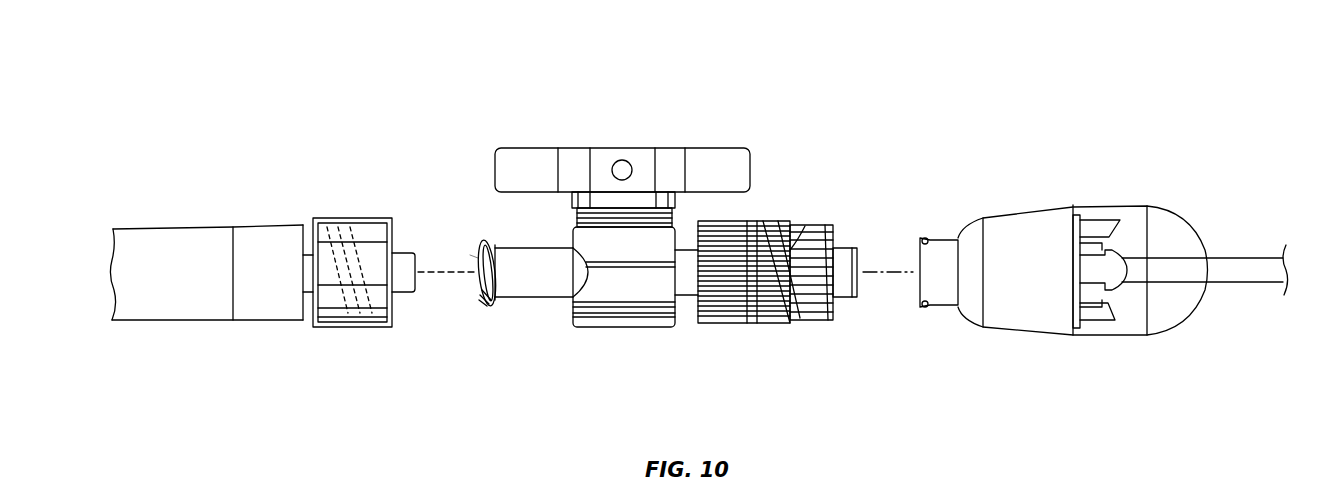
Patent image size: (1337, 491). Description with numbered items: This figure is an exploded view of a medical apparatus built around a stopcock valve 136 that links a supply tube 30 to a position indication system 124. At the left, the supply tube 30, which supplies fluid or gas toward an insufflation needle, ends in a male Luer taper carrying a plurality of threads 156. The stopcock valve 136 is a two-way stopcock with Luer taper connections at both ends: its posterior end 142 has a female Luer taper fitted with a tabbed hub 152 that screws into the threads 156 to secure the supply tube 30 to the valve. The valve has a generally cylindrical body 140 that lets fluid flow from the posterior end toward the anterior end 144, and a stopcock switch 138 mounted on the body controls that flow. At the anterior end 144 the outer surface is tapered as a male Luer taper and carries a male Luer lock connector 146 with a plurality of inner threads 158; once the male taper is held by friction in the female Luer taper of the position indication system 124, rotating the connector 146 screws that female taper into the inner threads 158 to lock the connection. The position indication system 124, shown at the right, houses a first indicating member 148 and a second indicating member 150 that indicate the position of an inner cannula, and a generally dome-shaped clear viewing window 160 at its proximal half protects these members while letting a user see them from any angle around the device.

The supply tube 30 is at (178, 247).
The position indication system 124 is at (1163, 143).
The stopcock valve 136 is at (613, 142).
The stopcock switch 138 is at (713, 147).
The generally cylindrical body 140 is at (552, 280).
The posterior end 142 is at (492, 298).
The anterior end 144 is at (860, 267).
The male Luer lock connector 146 is at (738, 325).
The first indicating member 148 is at (1090, 223).
The second indicating member 150 is at (1092, 250).
The tabbed hub 152 is at (462, 253).
The plurality of threads 156 is at (340, 300).
The inner threads 158 is at (792, 250).
The viewing window 160 is at (1173, 213).